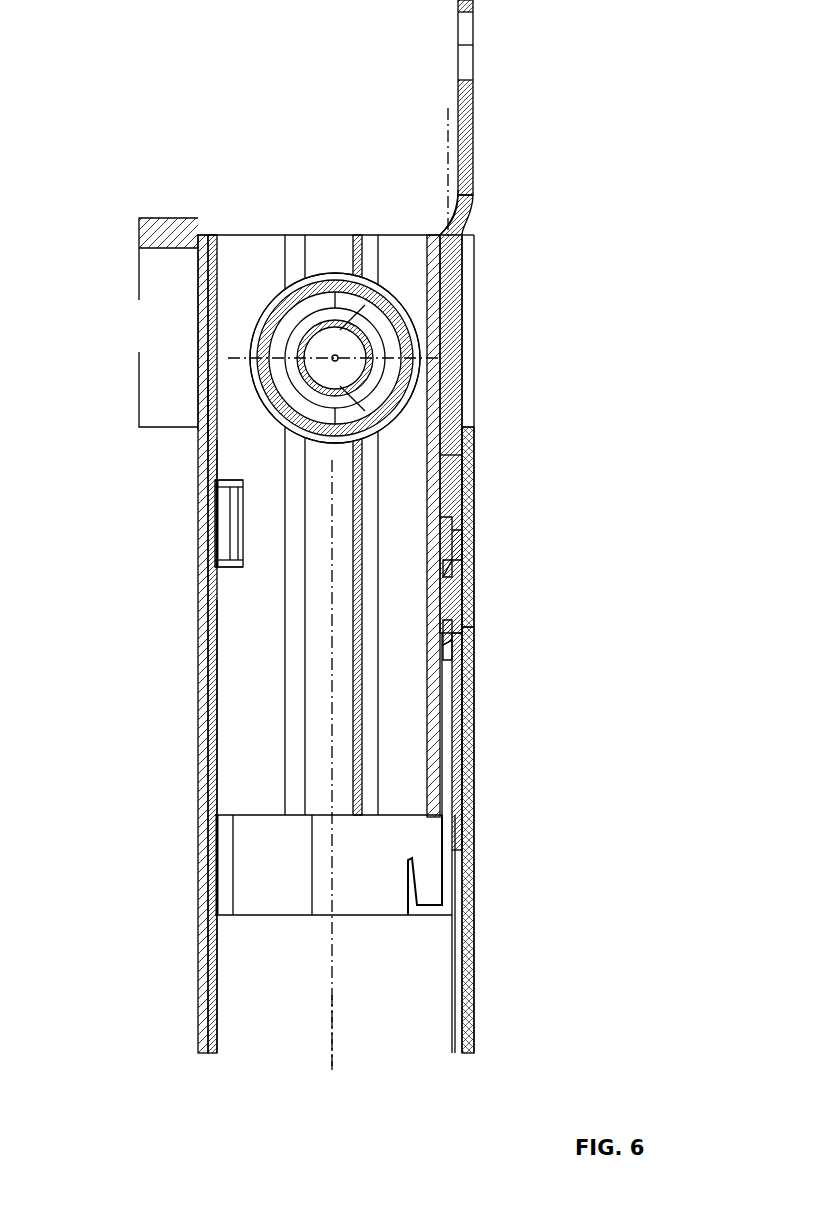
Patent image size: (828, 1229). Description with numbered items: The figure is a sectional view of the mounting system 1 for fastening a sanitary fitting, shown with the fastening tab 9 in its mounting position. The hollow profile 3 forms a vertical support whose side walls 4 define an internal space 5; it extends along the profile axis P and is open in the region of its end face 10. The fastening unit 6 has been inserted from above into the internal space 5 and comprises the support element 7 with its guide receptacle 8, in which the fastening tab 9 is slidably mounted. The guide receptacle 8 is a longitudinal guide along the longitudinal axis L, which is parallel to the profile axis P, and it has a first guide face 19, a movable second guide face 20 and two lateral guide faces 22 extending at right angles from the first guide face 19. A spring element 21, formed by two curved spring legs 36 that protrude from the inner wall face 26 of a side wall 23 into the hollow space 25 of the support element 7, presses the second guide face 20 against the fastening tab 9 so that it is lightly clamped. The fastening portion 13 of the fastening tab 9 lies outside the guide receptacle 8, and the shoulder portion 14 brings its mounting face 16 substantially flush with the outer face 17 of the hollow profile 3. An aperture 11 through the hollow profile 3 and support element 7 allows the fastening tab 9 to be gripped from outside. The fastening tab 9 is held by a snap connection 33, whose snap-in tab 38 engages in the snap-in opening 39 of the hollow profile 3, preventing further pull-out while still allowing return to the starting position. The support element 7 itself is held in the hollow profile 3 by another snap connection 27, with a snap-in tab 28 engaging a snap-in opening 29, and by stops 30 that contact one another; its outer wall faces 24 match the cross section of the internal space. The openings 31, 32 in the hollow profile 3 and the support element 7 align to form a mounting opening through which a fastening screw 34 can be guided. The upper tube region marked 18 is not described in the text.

The mounting system 1 is at (470, 990).
The hollow profile 3 is at (205, 990).
The side walls 4 is at (205, 910).
The internal space 5 is at (282, 989).
The fastening unit 6 is at (405, 745).
The support element 7 is at (230, 792).
The guide receptacle 8 is at (437, 382).
The fastening tab 9 is at (448, 653).
The end face 10 is at (473, 240).
The aperture 11 is at (468, 290).
The fastening portion 13 is at (467, 115).
The shoulder portion 14 is at (455, 195).
The mounting face 16 is at (463, 345).
The outer face 17 is at (470, 773).
The tube end 18 is at (466, 67).
The first guide face 19 is at (456, 455).
The second guide face 20 is at (448, 697).
The spring element 21 is at (330, 679).
The lateral guide faces 22 is at (455, 640).
The side wall 23 is at (205, 415).
The outer wall faces 24 is at (205, 340).
The hollow space 25 is at (256, 749).
The inner wall face 26 is at (205, 460).
The snap connection 27 is at (205, 523).
The snap-in tab 28 is at (205, 553).
The snap-in opening 29 is at (205, 493).
The stop 30 is at (468, 437).
The opening 31 is at (333, 275).
The opening 32 is at (335, 238).
The snap connection 33 is at (460, 546).
The fastening screw 34 is at (333, 358).
The spring legs 36 is at (171, 218).
The snap-in tab 38 is at (450, 563).
The snap-in opening 39 is at (468, 540).
The longitudinal axis L is at (445, 200).
The profile axis P is at (333, 995).